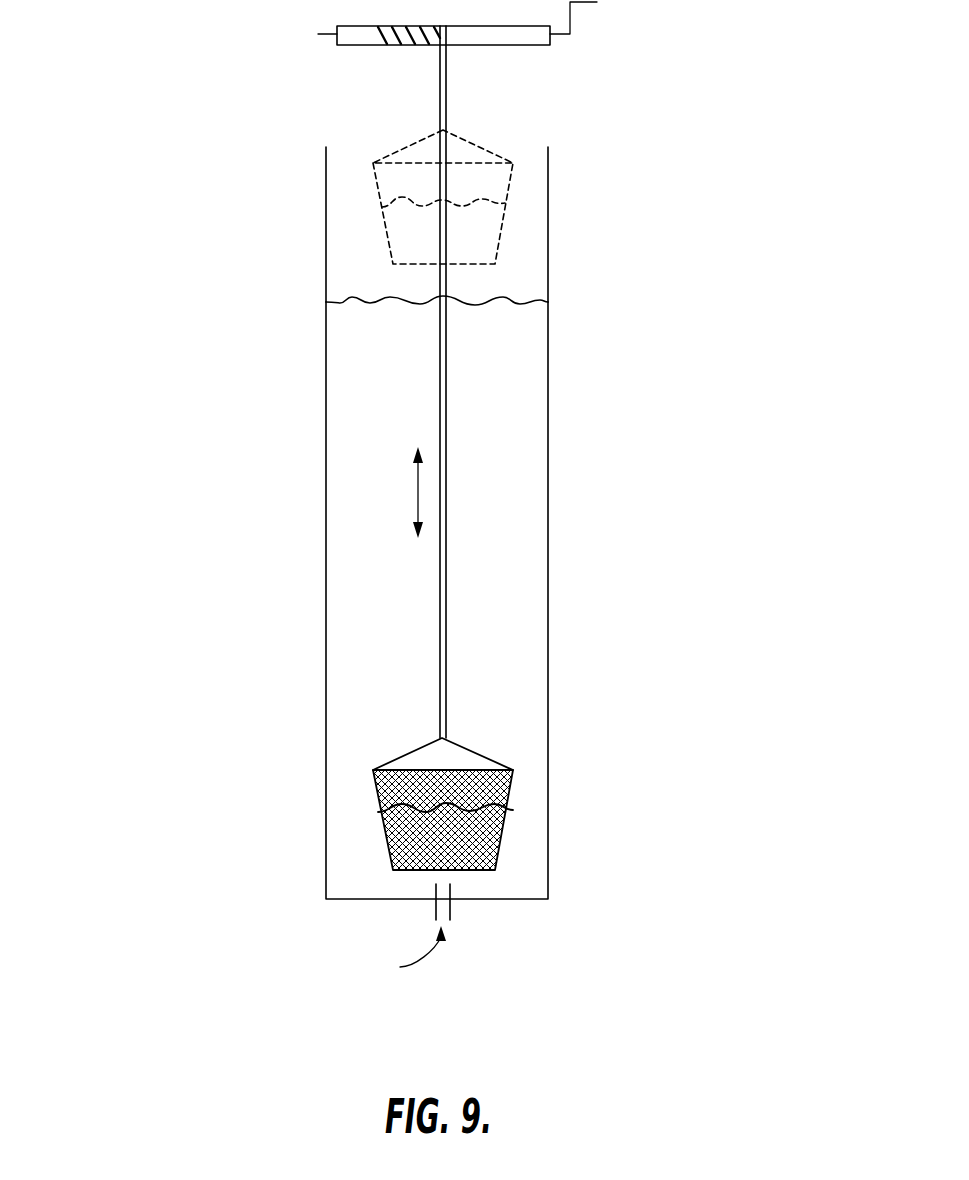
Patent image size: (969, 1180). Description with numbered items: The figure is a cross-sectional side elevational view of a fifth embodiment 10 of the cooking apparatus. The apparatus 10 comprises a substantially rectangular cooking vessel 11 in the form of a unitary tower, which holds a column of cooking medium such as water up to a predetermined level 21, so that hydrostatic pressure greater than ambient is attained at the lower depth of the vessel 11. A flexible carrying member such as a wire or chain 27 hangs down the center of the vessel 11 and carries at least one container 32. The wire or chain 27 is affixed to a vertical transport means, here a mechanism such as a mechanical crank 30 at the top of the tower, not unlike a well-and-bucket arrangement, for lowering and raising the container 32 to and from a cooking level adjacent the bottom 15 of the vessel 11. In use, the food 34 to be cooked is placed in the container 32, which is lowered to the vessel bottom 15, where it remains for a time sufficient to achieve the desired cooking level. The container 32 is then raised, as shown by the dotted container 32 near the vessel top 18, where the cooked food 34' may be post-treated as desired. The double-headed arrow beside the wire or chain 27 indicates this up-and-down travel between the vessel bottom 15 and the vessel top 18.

The apparatus (fifth embodiment) 10 is at (166, 325).
The cooking vessel 11 is at (548, 622).
The vessel bottom 15 is at (532, 885).
The vessel top 18 is at (548, 247).
The predetermined level 21 is at (368, 304).
The wire or chain 27 is at (447, 383).
The mechanical crank 30 is at (343, 47).
The container 32 is at (492, 188).
The food 34 is at (384, 843).
The cooked food 34' is at (368, 237).